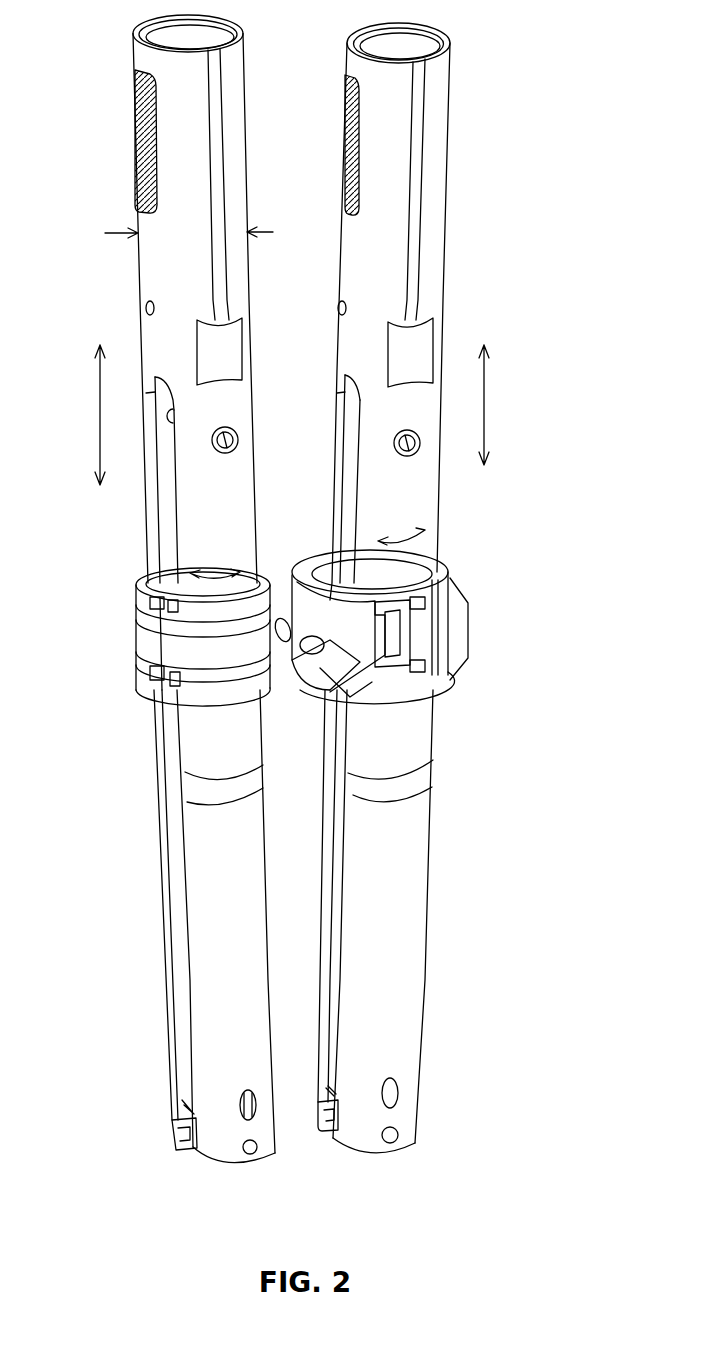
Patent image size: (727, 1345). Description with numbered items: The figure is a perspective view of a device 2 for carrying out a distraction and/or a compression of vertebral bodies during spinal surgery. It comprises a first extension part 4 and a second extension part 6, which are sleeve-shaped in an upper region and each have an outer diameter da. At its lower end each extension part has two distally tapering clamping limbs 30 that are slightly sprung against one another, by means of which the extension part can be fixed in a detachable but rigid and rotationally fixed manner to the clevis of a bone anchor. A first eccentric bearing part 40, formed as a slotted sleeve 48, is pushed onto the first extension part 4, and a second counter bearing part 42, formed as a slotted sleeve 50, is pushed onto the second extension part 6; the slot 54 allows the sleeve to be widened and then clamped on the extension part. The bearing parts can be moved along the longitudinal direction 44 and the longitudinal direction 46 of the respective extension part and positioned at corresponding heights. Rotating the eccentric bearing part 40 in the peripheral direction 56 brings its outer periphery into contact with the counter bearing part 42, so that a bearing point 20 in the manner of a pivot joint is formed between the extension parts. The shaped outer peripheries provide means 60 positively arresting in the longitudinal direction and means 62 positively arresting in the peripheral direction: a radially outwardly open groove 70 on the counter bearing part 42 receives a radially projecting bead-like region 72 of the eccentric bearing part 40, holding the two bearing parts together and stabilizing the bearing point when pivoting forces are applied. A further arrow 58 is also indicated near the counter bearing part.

The device 2 is at (556, 182).
The first extension part 4 is at (440, 265).
The second extension part 6 is at (165, 268).
The bearing point 20 is at (283, 578).
The clamping limbs 30 is at (165, 915).
The first eccentric bearing part 40 is at (442, 660).
The slotted sleeve 48 is at (455, 590).
The second counter bearing part 42 is at (147, 655).
The slotted sleeve 50 is at (136, 613).
The longitudinal direction 44 is at (486, 415).
The longitudinal direction 46 is at (98, 418).
The slot 54 is at (145, 665).
The peripheral direction 56 is at (403, 545).
The rotation direction of second ring 58 is at (208, 575).
The means positively arresting in the longitudinal direction 60 is at (315, 673).
The means positively arresting in the peripheral direction 62 is at (300, 648).
The groove 70 is at (142, 640).
The bead-like region 72 is at (355, 690).
The outer diameter da is at (166, 237).